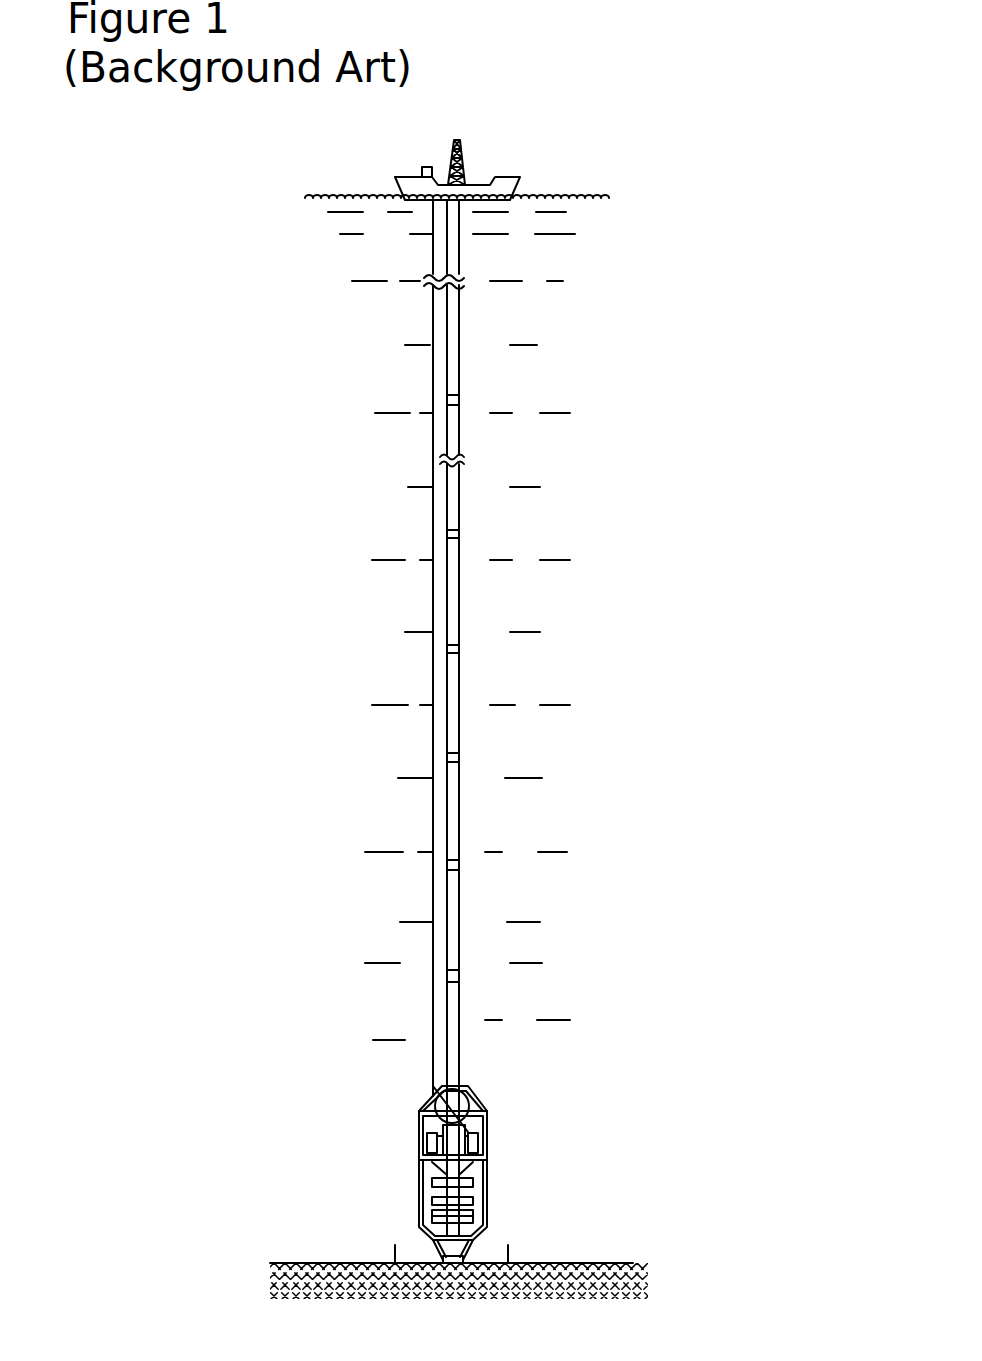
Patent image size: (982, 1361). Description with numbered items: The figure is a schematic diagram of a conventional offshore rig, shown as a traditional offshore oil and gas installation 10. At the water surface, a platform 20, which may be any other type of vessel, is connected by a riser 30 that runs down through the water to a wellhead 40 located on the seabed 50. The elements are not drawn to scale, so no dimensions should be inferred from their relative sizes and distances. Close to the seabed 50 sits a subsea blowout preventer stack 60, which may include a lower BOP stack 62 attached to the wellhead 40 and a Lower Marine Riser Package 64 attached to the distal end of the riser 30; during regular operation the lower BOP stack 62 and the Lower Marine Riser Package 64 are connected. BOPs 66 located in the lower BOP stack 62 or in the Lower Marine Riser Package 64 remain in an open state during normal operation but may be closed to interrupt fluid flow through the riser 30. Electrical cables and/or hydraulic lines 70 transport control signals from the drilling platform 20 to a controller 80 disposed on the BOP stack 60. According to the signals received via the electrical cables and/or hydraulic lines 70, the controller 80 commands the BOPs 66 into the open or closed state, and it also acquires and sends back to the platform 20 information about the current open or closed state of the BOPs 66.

The offshore oil and gas installation 10 is at (278, 147).
The platform 20 is at (508, 178).
The riser 30 is at (455, 958).
The electrical cables and/or hydraulic lines 70 is at (433, 733).
The Lower Marine Riser Package 64 is at (477, 1096).
The subsea blowout preventer stack 60 is at (430, 1140).
The controller 80 is at (473, 1138).
The lower BOP stack 62 is at (487, 1183).
The BOPs 66 is at (432, 1202).
The wellhead 40 is at (478, 1253).
The seabed 50 is at (580, 1263).